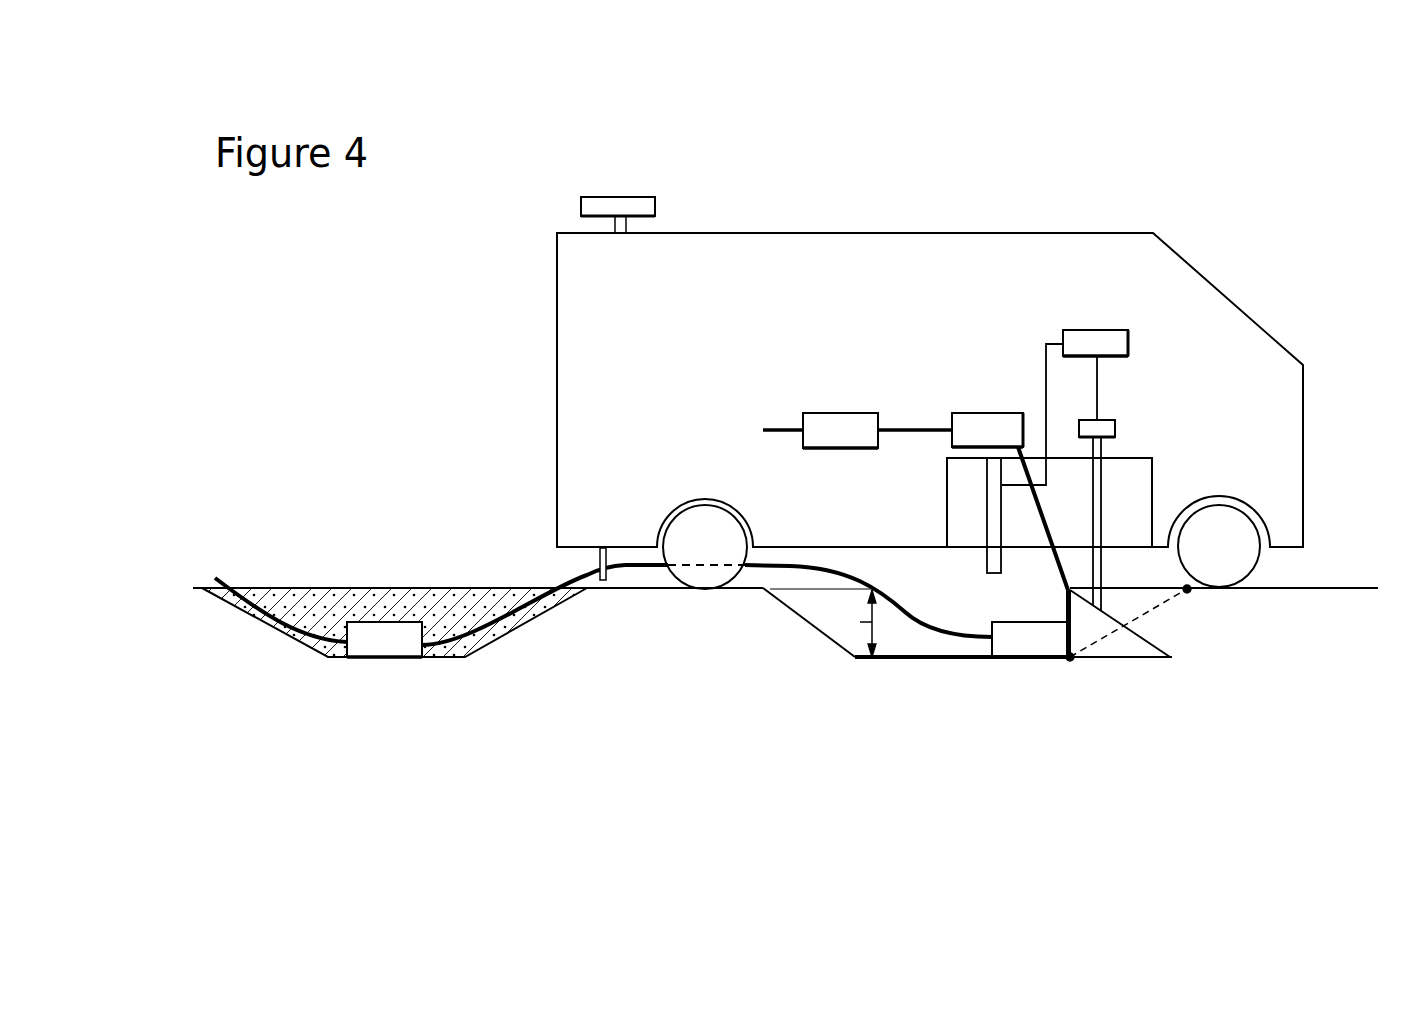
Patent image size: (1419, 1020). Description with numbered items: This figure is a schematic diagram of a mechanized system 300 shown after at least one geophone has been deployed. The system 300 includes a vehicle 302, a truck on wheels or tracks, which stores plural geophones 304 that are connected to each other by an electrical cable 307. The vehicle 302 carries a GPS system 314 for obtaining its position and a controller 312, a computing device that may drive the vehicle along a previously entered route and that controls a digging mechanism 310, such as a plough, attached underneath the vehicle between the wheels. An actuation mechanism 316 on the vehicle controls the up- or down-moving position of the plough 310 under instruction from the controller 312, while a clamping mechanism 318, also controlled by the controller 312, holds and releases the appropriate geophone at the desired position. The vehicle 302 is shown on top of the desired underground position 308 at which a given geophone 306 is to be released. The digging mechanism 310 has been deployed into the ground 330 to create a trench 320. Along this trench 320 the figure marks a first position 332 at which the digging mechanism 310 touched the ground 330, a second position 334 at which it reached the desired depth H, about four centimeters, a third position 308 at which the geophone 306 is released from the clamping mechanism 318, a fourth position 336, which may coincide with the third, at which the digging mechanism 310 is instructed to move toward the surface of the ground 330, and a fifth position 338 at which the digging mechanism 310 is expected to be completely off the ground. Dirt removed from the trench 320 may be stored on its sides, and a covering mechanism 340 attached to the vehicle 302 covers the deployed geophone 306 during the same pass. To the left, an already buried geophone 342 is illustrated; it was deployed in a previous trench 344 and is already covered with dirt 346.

The system 300 is at (873, 169).
The vehicle 302 is at (1113, 258).
The geophones 304 is at (812, 413).
The geophone 306 is at (1010, 637).
The electrical cable 307 is at (920, 430).
The desired underground position 308 is at (1038, 660).
The digging mechanism 310 is at (1110, 637).
The controller 312 is at (1105, 333).
The GPS system 314 is at (655, 207).
The actuation mechanism 316 is at (1115, 432).
The clamping mechanism 318 is at (987, 543).
The trench 320 is at (922, 640).
The ground 330 is at (625, 592).
The first position 332 is at (762, 590).
The second position 334 is at (855, 657).
The fourth position 336 is at (1073, 667).
The fifth position 338 is at (1187, 593).
The covering mechanism 340 is at (600, 553).
The buried geophone 342 is at (384, 660).
The previous trench 344 is at (296, 637).
The dirt 346 is at (313, 615).